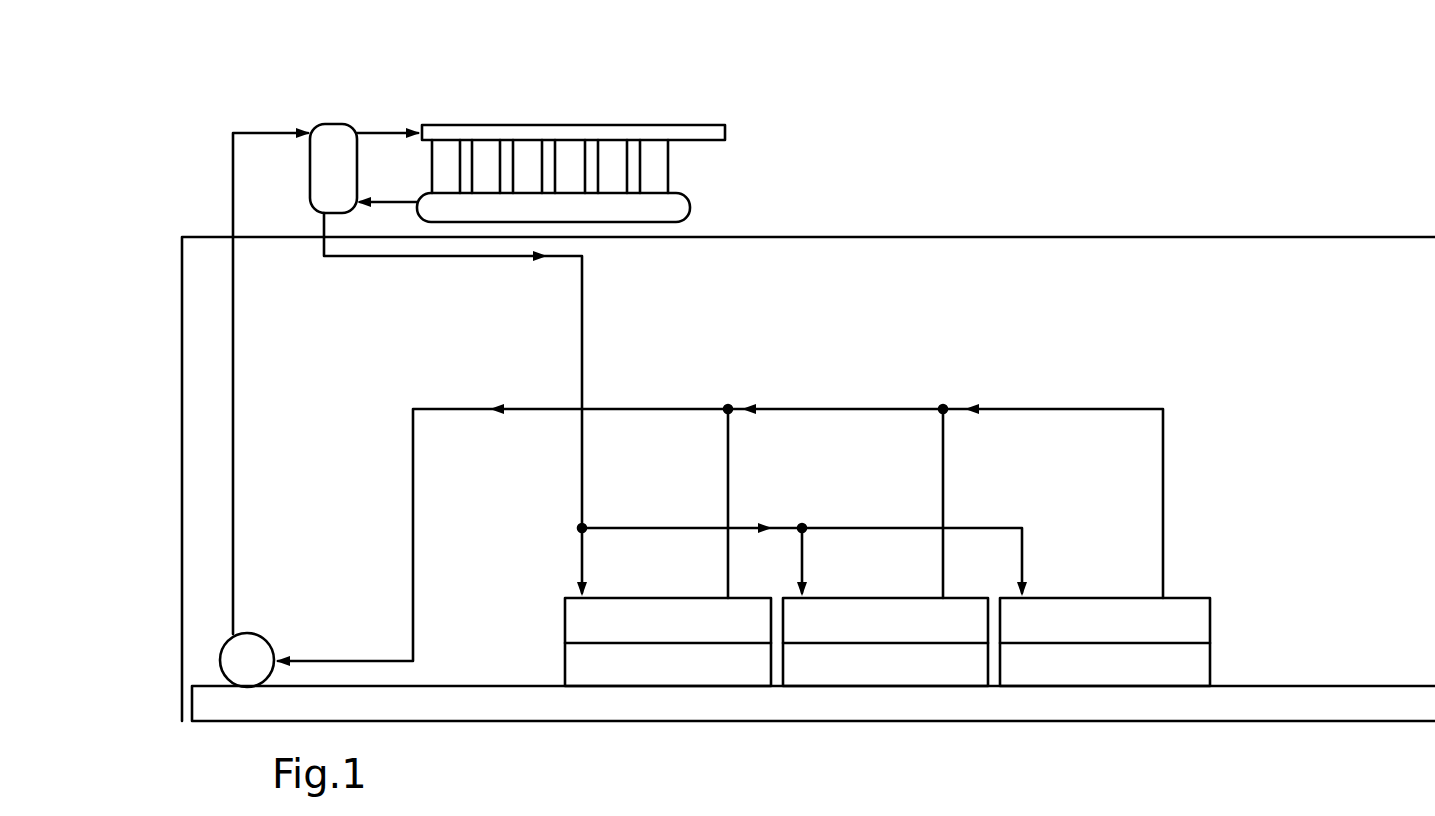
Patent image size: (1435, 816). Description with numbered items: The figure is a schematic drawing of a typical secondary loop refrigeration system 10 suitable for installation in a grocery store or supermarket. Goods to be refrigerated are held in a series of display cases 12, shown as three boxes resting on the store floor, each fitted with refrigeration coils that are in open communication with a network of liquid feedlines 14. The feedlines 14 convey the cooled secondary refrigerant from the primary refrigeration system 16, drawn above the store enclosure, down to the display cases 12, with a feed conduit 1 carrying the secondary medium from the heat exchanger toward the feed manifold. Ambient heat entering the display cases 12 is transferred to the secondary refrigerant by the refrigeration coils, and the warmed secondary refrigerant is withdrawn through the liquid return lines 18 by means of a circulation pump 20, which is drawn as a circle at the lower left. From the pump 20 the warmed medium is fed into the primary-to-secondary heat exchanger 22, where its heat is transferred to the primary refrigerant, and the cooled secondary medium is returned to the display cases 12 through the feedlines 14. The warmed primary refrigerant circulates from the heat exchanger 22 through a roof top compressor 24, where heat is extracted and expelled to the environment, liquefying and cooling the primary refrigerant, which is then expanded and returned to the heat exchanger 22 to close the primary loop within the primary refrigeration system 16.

The secondary loop refrigeration system 10 is at (168, 200).
The display cases 12 is at (590, 626).
The liquid feedlines 14 is at (883, 526).
The primary refrigeration system 16 is at (511, 131).
The liquid return lines 18 is at (413, 450).
The circulation pump 20 is at (253, 636).
The primary-to-secondary heat exchanger 22 is at (337, 135).
The roof top compressor 24 is at (618, 123).
The coolant conduit 1 is at (580, 462).